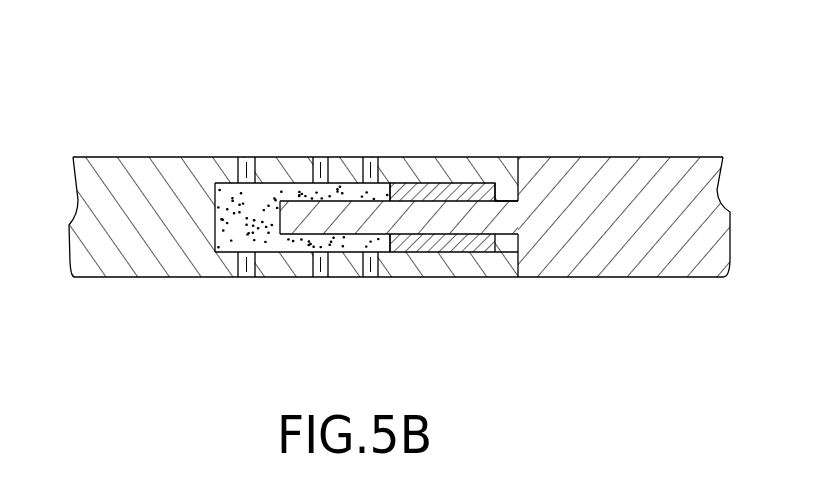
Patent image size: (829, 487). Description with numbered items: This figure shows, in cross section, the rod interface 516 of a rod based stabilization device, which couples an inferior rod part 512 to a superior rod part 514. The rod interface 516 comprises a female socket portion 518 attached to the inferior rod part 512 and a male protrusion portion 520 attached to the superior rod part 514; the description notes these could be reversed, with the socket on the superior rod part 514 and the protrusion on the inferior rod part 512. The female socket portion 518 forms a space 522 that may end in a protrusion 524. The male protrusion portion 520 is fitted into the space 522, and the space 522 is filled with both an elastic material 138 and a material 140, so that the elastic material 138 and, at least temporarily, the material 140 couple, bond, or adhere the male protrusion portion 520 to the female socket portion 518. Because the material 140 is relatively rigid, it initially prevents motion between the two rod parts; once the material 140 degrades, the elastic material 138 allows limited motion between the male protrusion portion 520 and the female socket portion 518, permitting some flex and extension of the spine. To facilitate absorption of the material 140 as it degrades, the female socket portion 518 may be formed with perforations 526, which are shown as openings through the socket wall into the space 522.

The inferior rod part 512 is at (101, 265).
The superior rod part 514 is at (680, 203).
The rod interface 516 is at (363, 288).
The female socket portion 518 is at (365, 198).
The male protrusion portion 520 is at (508, 220).
The space 522 is at (267, 198).
The protrusion 524 is at (507, 190).
The perforations 526 is at (232, 256).
The elastic material 138 is at (460, 245).
The material 140 is at (270, 266).